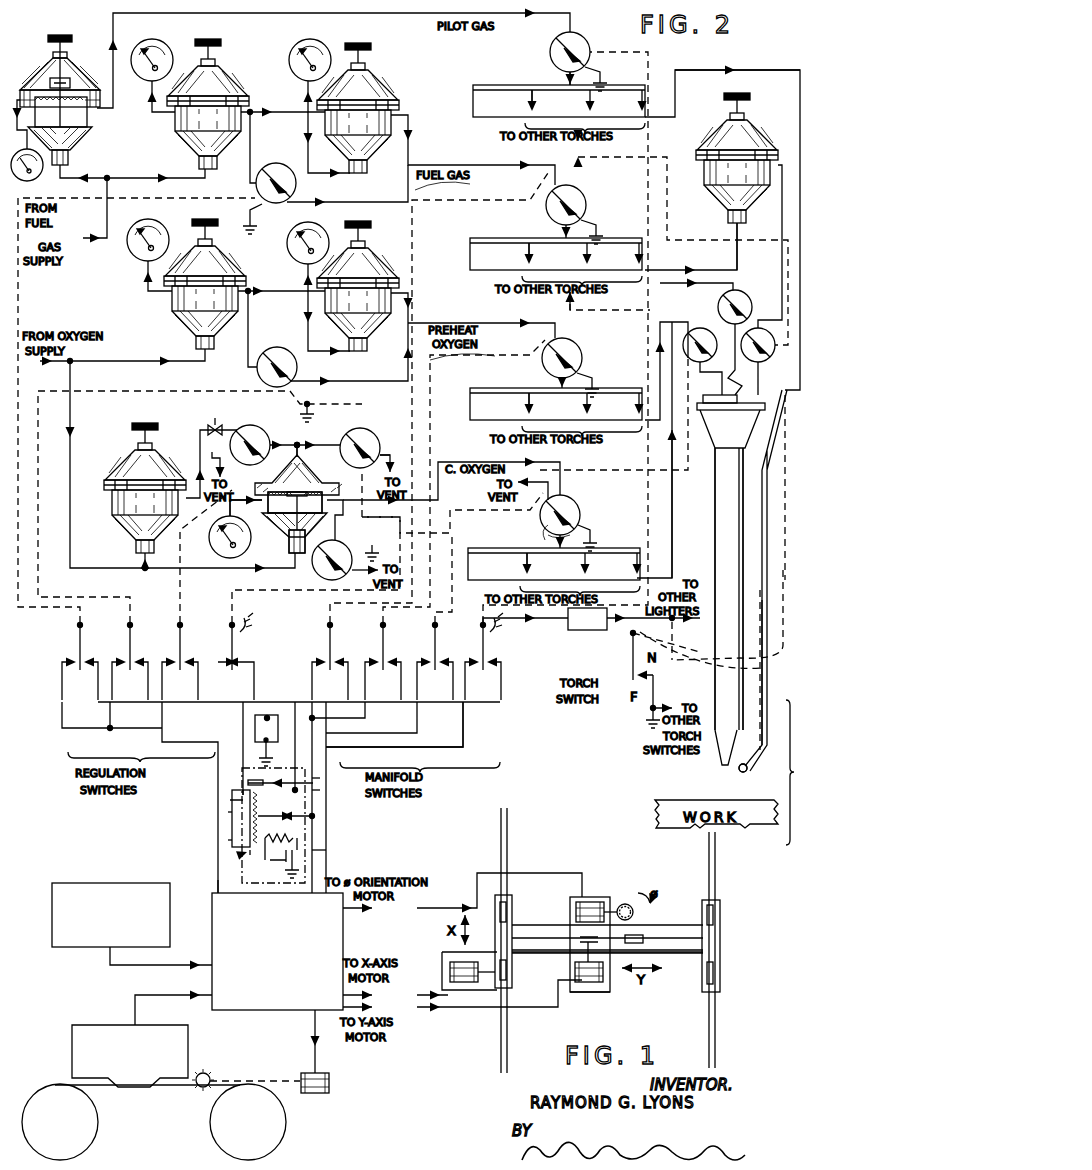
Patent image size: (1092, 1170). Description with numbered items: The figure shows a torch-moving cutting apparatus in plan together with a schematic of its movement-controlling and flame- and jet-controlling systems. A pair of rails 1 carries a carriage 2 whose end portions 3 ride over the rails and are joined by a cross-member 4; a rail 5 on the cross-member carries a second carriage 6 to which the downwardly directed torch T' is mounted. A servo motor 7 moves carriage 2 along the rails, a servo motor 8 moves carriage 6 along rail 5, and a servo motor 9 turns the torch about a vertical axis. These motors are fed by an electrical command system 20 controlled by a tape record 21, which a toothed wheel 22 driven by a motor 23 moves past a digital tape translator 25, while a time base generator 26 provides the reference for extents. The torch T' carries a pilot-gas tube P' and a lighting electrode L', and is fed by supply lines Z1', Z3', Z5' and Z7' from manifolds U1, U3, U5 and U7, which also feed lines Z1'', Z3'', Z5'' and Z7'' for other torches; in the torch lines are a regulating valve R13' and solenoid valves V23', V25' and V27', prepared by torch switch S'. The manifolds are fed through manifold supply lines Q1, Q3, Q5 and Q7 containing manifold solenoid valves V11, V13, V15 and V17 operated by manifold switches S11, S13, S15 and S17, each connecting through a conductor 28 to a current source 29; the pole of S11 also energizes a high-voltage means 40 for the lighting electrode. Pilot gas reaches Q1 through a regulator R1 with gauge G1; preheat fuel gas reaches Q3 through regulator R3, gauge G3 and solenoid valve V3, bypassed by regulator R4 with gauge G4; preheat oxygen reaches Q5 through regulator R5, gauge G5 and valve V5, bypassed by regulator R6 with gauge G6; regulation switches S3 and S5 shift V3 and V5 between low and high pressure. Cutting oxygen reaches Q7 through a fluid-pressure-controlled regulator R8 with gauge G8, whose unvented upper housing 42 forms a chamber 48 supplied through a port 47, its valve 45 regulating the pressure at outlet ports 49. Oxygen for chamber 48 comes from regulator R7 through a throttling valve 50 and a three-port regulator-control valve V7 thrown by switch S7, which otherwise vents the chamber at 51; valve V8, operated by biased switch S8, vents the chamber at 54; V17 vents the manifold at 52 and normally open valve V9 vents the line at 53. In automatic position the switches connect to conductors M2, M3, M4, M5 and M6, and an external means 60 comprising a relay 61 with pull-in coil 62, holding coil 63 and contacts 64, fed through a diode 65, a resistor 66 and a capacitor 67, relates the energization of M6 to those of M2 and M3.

In FIG. 1, the rails 1 is at (512, 845).
In FIG. 1, the carriage 2 is at (673, 968).
In FIG. 1, the end portions 3 is at (495, 931).
In FIG. 1, the cross-member 4 is at (676, 956).
In FIG. 1, the rail 5 is at (686, 934).
In FIG. 1, the second carriage 6 is at (593, 897).
In FIG. 1, the servo motor 7 is at (456, 960).
In FIG. 1, the servo motor 8 is at (600, 985).
In FIG. 1, the servo motor 9 is at (578, 912).
In FIG. 2, the torch T' is at (715, 589).
In FIG. 1, the torch T' is at (601, 897).
In FIG. 2, the electrical command system 20 is at (278, 1010).
In FIG. 2, the record 21 is at (108, 1087).
In FIG. 2, the toothed wheel 22 is at (209, 1075).
In FIG. 2, the motor 23 is at (332, 1090).
In FIG. 2, the digital tape translator 25 is at (72, 1040).
In FIG. 2, the time base generator 26 is at (122, 883).
In FIG. 2, the conductor 28 is at (484, 712).
In FIG. 2, the current source 29 is at (270, 718).
In FIG. 2, the high-voltage generating means 40 is at (602, 630).
In FIG. 2, the upper housing 42 is at (270, 482).
In FIG. 2, the valve 45 is at (288, 536).
In FIG. 2, the port 47 is at (308, 450).
In FIG. 2, the chamber 48 is at (296, 436).
In FIG. 2, the outlet ports 49 is at (344, 524).
In FIG. 2, the throttling valve 50 is at (206, 404).
In FIG. 2, the venting path 51 is at (214, 458).
In FIG. 2, the venting path 52 is at (540, 530).
In FIG. 2, the vent 53 is at (381, 554).
In FIG. 2, the vent 54 is at (397, 440).
In FIG. 2, the external means 60 is at (226, 878).
In FIG. 2, the relay 61 is at (240, 855).
In FIG. 2, the pull-in coil 62 is at (232, 830).
In FIG. 2, the holding coil 63 is at (230, 792).
In FIG. 2, the normally open contacts 64 is at (276, 759).
In FIG. 2, the diode 65 is at (298, 812).
In FIG. 2, the resistor 66 is at (298, 836).
In FIG. 2, the capacitor 67 is at (284, 856).
In FIG. 2, the gauge G1 is at (33, 171).
In FIG. 2, the gauge G3 is at (156, 40).
In FIG. 2, the gauge G4 is at (312, 40).
In FIG. 2, the gauge G5 is at (148, 220).
In FIG. 2, the gauge G6 is at (300, 228).
In FIG. 2, the gauge G8 is at (239, 537).
In FIG. 2, the regulator valve R1 is at (78, 42).
In FIG. 2, the regulating valve R3 is at (226, 70).
In FIG. 2, the regulating valve R4 is at (376, 73).
In FIG. 2, the regulating valve R5 is at (226, 266).
In FIG. 2, the regulating valve R6 is at (376, 243).
In FIG. 2, the regulating valve R7 is at (160, 450).
In FIG. 2, the fluid-pressure-controlled regulator R8 is at (312, 466).
In FIG. 2, the regulating valve R13' is at (741, 158).
In FIG. 2, the solenoid valve V3 is at (288, 165).
In FIG. 2, the solenoid valve V5 is at (290, 347).
In FIG. 2, the regulator-control valve V7 is at (260, 432).
In FIG. 2, the solenoid valve V8 is at (354, 432).
In FIG. 2, the solenoid valve V9 is at (318, 575).
In FIG. 2, the manifold solenoid valve V11 is at (580, 42).
In FIG. 2, the manifold solenoid valve V13 is at (580, 190).
In FIG. 2, the manifold solenoid valve V15 is at (580, 345).
In FIG. 2, the manifold solenoid valve V17 is at (578, 498).
In FIG. 2, the torch solenoid valve V23' is at (744, 296).
In FIG. 2, the torch solenoid valve V25' is at (690, 326).
In FIG. 2, the torch solenoid valve V27' is at (690, 356).
In FIG. 2, the manifold supply line Q1 is at (548, 66).
In FIG. 2, the manifold supply line Q3 is at (516, 173).
In FIG. 2, the manifold supply line Q5 is at (530, 328).
In FIG. 2, the manifold supply line Q7 is at (582, 530).
In FIG. 2, the supply manifold U1 is at (504, 80).
In FIG. 2, the supply manifold U3 is at (516, 236).
In FIG. 2, the supply manifold U5 is at (504, 383).
In FIG. 2, the supply manifold U7 is at (506, 544).
In FIG. 2, the supply line Z1'' is at (506, 101).
In FIG. 2, the supply line Z3'' is at (503, 254).
In FIG. 2, the supply line Z5'' is at (503, 404).
In FIG. 2, the supply line Z7'' is at (501, 564).
In FIG. 2, the supply line Z1' is at (737, 61).
In FIG. 2, the supply line Z3' is at (757, 245).
In FIG. 2, the supply line Z5' is at (610, 311).
In FIG. 2, the supply line Z7' is at (690, 504).
In FIG. 2, the regulation switch S3 is at (77, 628).
In FIG. 2, the regulation switch S5 is at (128, 628).
In FIG. 2, the regulation switch S7 is at (178, 628).
In FIG. 2, the regulation switch S8 is at (229, 656).
In FIG. 2, the manifold switch S11 is at (481, 628).
In FIG. 2, the manifold switch S13 is at (328, 628).
In FIG. 2, the manifold switch S15 is at (381, 628).
In FIG. 2, the manifold switch S17 is at (433, 628).
In FIG. 2, the torch switch S' is at (639, 680).
In FIG. 2, the conductor M2 is at (322, 800).
In FIG. 2, the conductor M3 is at (228, 812).
In FIG. 2, the conductor M4 is at (320, 854).
In FIG. 2, the conductor M5 is at (228, 840).
In FIG. 2, the conductor M6 is at (322, 779).
In FIG. 2, the pilot-gas tube P' is at (767, 679).
In FIG. 2, the lighting electrode L' is at (759, 776).